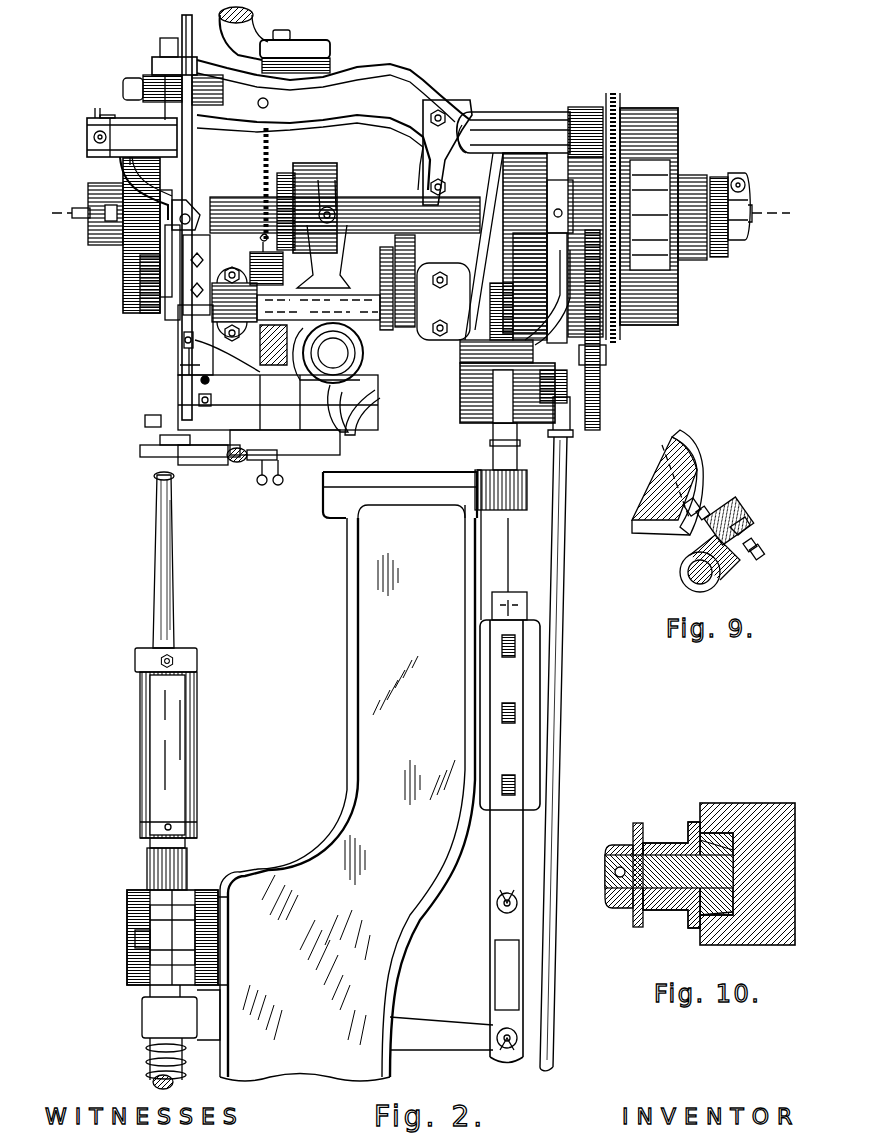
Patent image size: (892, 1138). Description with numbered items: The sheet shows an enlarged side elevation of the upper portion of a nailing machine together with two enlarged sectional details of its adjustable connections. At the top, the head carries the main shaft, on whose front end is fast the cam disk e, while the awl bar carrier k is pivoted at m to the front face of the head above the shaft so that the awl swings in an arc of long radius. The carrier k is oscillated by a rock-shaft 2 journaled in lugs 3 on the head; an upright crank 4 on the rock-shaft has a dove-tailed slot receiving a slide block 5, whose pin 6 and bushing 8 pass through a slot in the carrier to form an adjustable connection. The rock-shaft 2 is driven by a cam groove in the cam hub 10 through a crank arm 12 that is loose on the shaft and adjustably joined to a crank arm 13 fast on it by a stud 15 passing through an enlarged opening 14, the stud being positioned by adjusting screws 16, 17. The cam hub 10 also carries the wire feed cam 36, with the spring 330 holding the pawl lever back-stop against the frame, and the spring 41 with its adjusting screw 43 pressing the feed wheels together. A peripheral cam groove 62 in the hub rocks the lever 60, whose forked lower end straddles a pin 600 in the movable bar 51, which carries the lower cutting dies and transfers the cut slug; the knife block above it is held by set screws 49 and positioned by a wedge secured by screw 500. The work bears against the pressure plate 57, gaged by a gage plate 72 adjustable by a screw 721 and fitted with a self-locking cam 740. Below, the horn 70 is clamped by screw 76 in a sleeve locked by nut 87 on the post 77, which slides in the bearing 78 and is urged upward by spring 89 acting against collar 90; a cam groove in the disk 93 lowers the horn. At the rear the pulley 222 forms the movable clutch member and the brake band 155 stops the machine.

In FIG. 2, the pivot m is at (128, 80).
In FIG. 2, the slide block 5 is at (418, 214).
In FIG. 10, the slide block 5 is at (722, 835).
In FIG. 2, the awl bar carrier k is at (124, 263).
In FIG. 2, the cam disk e is at (140, 318).
In FIG. 2, the spring 330 is at (262, 160).
In FIG. 2, the cam hub 10 is at (313, 168).
In FIG. 9, the cam hub 10 is at (642, 462).
In FIG. 2, the wire feed cam 36 is at (279, 175).
In FIG. 2, the cam groove 62 is at (346, 180).
In FIG. 2, the upright crank 4 is at (196, 275).
In FIG. 10, the upright crank 4 is at (780, 803).
In FIG. 2, the lugs 3 is at (296, 304).
In FIG. 2, the rock-shaft 2 is at (358, 335).
In FIG. 2, the lever 60 is at (352, 392).
In FIG. 2, the screw 43 is at (177, 343).
In FIG. 2, the spring 41 is at (190, 365).
In FIG. 2, the screw 500 is at (207, 377).
In FIG. 2, the set screws 49 is at (205, 407).
In FIG. 2, the pin 600 is at (362, 425).
In FIG. 2, the movable bar 51 is at (305, 433).
In FIG. 2, the stop z is at (160, 440).
In FIG. 2, the pressure plate 57 is at (140, 451).
In FIG. 2, the gage plate 72 is at (192, 462).
In FIG. 2, the self-locking cam 740 is at (237, 462).
In FIG. 2, the screw 721 is at (278, 486).
In FIG. 2, the crank arm 12 is at (405, 200).
In FIG. 9, the crank arm 12 is at (672, 535).
In FIG. 2, the disk 93 is at (530, 165).
In FIG. 2, the pulley 222 is at (651, 315).
In FIG. 2, the brake band 155 is at (598, 205).
In FIG. 2, the horn 70 is at (176, 594).
In FIG. 2, the clamping screw 76 is at (175, 662).
In FIG. 2, the nut 87 is at (197, 826).
In FIG. 2, the post 77 is at (187, 862).
In FIG. 2, the bearing 78 is at (127, 905).
In FIG. 2, the collar 90 is at (142, 1015).
In FIG. 2, the spring 89 is at (148, 1050).
In FIG. 9, the adjusting screw 17 is at (697, 503).
In FIG. 9, the enlarged opening 14 is at (732, 514).
In FIG. 2, the stud 15 is at (196, 687).
In FIG. 9, the stud 15 is at (748, 522).
In FIG. 9, the adjusting screw 16 is at (754, 556).
In FIG. 9, the crank arm 13 is at (682, 565).
In FIG. 10, the bushing 8 is at (660, 842).
In FIG. 10, the pin 6 is at (668, 892).